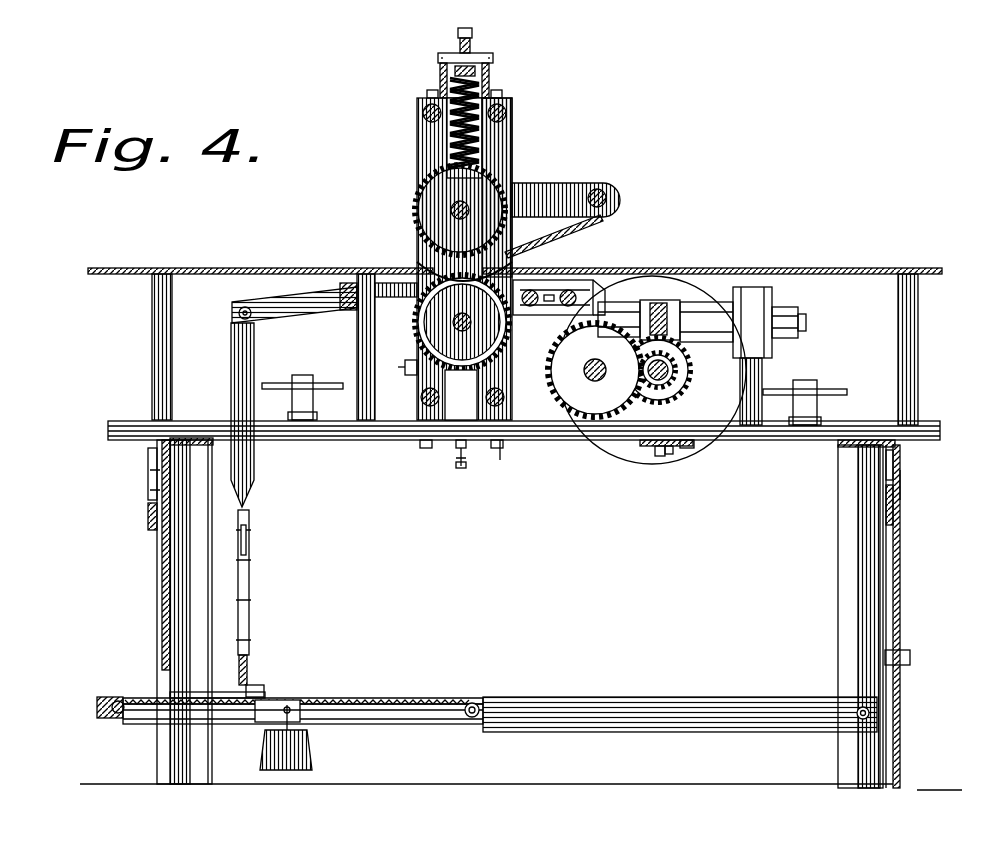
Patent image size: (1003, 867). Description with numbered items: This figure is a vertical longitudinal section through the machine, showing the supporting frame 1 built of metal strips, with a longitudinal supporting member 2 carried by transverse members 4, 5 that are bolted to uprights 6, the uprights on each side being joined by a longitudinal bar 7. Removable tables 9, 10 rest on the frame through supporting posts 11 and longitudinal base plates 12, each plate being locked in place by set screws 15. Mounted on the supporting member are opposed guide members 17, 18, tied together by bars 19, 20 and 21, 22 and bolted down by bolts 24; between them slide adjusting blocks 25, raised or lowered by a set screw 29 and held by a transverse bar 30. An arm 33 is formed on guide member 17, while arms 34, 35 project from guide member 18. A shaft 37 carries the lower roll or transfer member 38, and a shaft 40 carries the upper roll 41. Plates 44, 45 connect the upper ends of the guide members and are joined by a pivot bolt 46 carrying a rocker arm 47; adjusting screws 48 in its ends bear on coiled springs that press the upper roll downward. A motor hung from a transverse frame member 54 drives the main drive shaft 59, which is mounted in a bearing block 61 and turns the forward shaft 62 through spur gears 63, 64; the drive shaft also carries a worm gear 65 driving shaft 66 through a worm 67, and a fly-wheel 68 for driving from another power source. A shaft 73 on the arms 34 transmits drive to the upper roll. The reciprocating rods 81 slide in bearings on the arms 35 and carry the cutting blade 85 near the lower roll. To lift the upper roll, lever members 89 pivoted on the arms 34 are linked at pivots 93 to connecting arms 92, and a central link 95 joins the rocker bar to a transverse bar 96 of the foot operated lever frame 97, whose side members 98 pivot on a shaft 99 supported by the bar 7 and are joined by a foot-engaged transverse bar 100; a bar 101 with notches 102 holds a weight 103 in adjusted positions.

The supporting frame 1 is at (914, 497).
The longitudinal supporting member 2 is at (520, 442).
The transverse member 4 is at (150, 440).
The transverse member 5 is at (866, 470).
The upright 6 is at (175, 542).
The longitudinal bar 7 is at (560, 710).
The removable table 9 is at (222, 268).
The removable table 10 is at (790, 268).
The supporting post 11 is at (152, 330).
The longitudinal base plate 12 is at (140, 420).
The set screw 15 is at (302, 376).
The guide member 17 is at (425, 125).
The guide member 18 is at (505, 144).
The bar 19 is at (421, 396).
The bar 20 is at (424, 108).
The bar 21 is at (504, 400).
The bar 22 is at (508, 110).
The bolt 24 is at (425, 448).
The adjusting block 25 is at (458, 405).
The set screw 29 is at (461, 468).
The transverse bar 30 is at (408, 366).
The arm 33 is at (372, 312).
The arm 34 is at (560, 185).
The arm 35 is at (598, 282).
The shaft 37 is at (460, 328).
The roll or transfer member 38 is at (348, 283).
The shaft 40 is at (469, 210).
The roll or transfer member 41 is at (416, 208).
The plate 44 is at (440, 66).
The plate 45 is at (489, 78).
The pivot bolt 46 is at (493, 58).
The rocker arm 47 is at (470, 46).
The adjusting screw 48 is at (458, 32).
The transverse frame member 54 is at (790, 446).
The main drive shaft 59 is at (648, 368).
The bearing block 61 is at (658, 456).
The shaft 62 is at (596, 360).
The spur gear 63 is at (690, 446).
The spur gear 64 is at (605, 400).
The worm gear 65 is at (668, 454).
The shaft 66 is at (800, 312).
The worm 67 is at (660, 300).
The fly-wheel 68 is at (637, 452).
The shaft 73 is at (606, 196).
The rod 81 is at (566, 288).
The cutting blade 85 is at (430, 268).
The lever member 89 is at (282, 297).
The connecting arm 92 is at (252, 478).
The pivot 93 is at (238, 312).
The central link 95 is at (252, 590).
The transverse bar 96 is at (249, 670).
The foot operated lever frame 97 is at (97, 708).
The side member 98 is at (420, 700).
The shaft 99 is at (478, 704).
The transverse bar 100 is at (112, 698).
The bar 101 is at (360, 718).
The notch 102 is at (330, 700).
The weight 103 is at (310, 752).